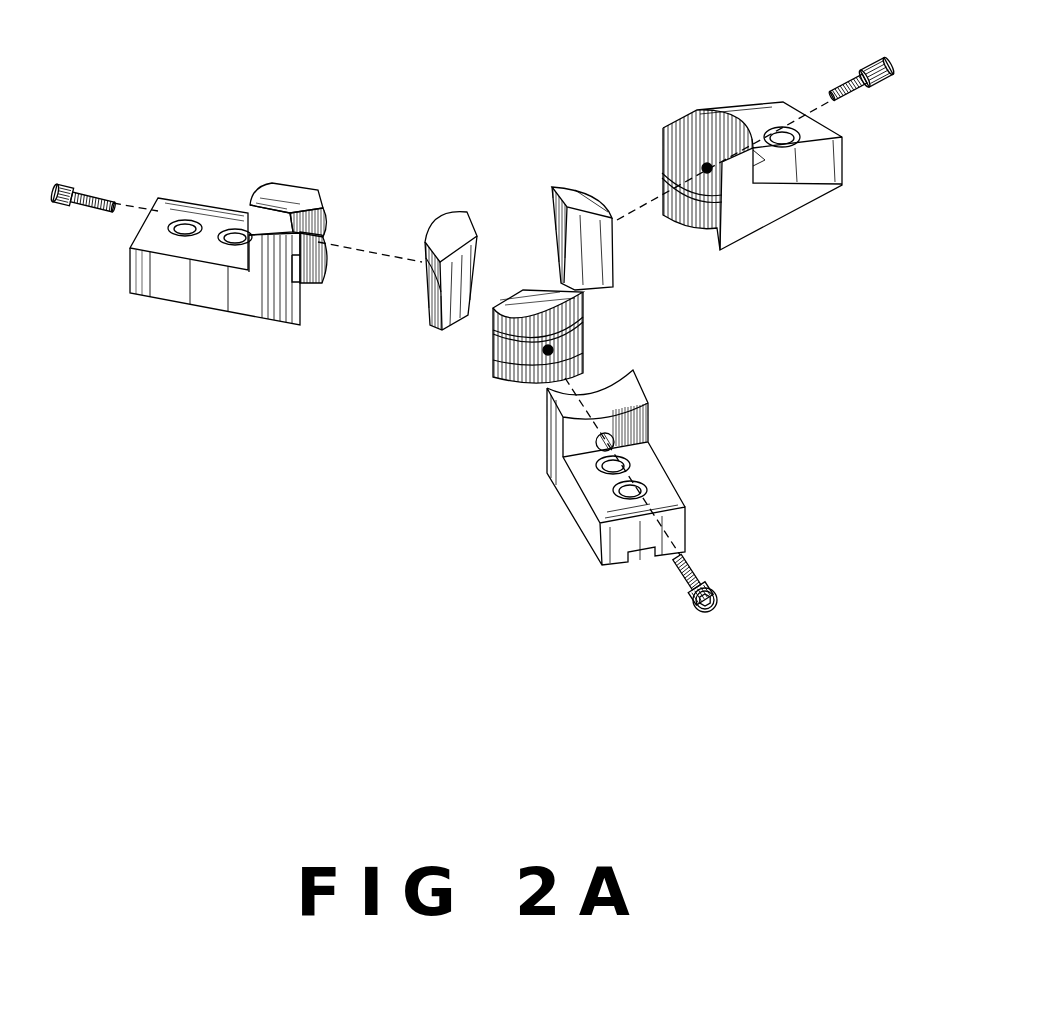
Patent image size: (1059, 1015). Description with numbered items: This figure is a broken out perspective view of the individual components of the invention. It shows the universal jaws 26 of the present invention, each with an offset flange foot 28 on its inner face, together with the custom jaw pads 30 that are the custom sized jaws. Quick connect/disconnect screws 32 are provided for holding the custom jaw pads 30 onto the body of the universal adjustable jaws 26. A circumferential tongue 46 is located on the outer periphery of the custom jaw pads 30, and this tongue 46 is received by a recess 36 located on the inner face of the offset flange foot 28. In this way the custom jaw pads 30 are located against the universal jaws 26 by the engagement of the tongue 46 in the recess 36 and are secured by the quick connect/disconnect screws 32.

The universal jaws 26 is at (264, 312).
The offset flange foot 28 is at (281, 185).
The custom jaw pads 30 is at (530, 277).
The quick connect/disconnect screws 32 is at (70, 221).
The recess 36 is at (312, 222).
The tongue 46 is at (520, 350).